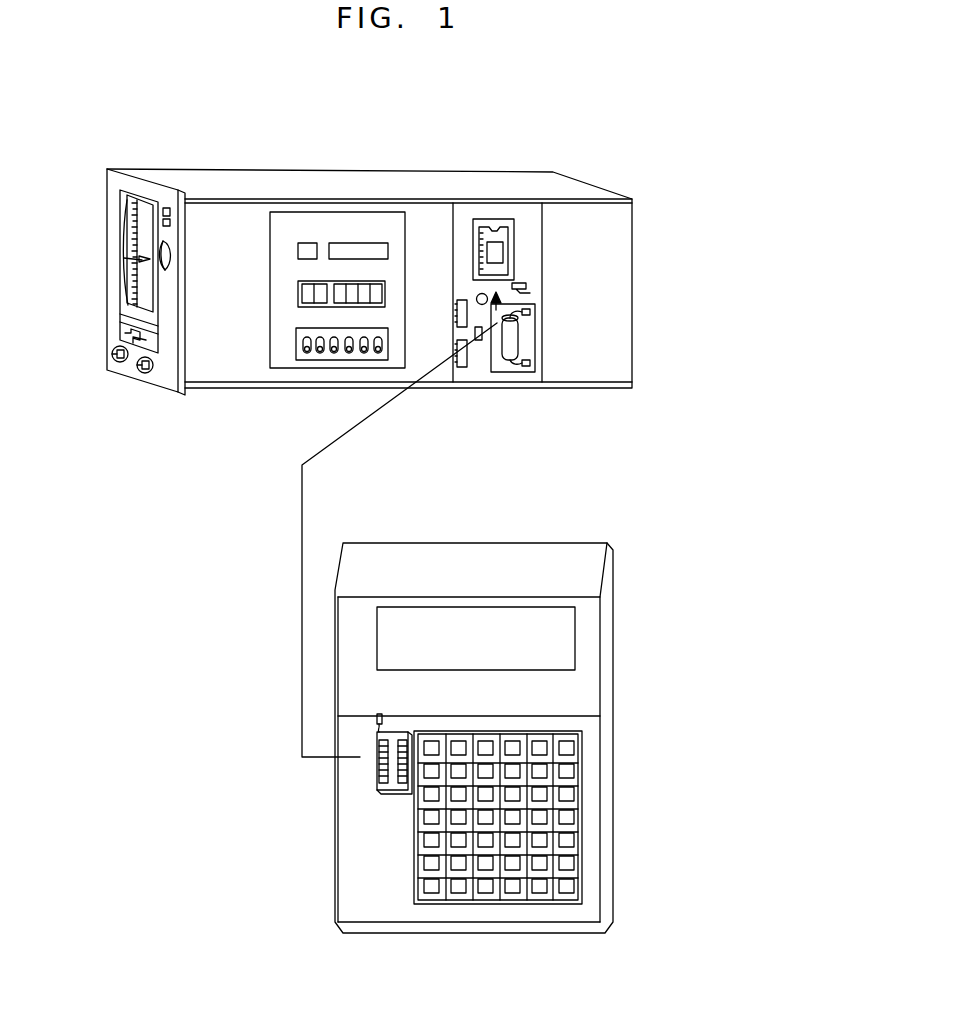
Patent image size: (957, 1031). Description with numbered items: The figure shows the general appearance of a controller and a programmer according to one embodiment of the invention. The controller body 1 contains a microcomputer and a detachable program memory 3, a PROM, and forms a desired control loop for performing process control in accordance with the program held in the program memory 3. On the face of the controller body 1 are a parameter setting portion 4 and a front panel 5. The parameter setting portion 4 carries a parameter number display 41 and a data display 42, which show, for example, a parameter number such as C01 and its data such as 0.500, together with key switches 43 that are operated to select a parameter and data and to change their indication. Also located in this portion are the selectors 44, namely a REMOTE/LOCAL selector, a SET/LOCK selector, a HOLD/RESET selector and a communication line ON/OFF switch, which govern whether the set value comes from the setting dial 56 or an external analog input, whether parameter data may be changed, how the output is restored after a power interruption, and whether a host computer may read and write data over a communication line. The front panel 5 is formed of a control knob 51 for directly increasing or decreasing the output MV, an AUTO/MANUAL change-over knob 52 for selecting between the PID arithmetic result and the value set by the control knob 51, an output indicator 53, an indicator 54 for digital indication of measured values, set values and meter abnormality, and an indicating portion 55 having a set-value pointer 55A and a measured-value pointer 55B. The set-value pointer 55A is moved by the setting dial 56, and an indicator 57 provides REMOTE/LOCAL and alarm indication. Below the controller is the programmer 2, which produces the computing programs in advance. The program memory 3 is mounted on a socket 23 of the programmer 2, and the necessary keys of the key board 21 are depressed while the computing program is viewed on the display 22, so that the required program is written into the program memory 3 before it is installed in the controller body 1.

The controller body 1 is at (397, 172).
The programmer 2 is at (545, 552).
The program memory 3 is at (505, 240).
The parameter setting portion 4 is at (270, 336).
The front panel 5 is at (163, 390).
The key board 21 is at (490, 905).
The display 22 is at (572, 641).
The socket 23 is at (393, 790).
The parameter number display 41 is at (308, 228).
The data display 42 is at (359, 233).
The key switches 43 is at (298, 290).
The selectors 44 is at (305, 361).
The control knob 51 is at (145, 373).
The AUTO/MANUAL change-over knob 52 is at (117, 367).
The output indicator 53 is at (124, 333).
The indicator 54 is at (124, 318).
The indicating portion 55 is at (128, 216).
The set-value pointer 55A is at (150, 258).
The measured-value pointer 55B is at (124, 259).
The setting dial 56 is at (172, 254).
The indicator 57 is at (166, 208).